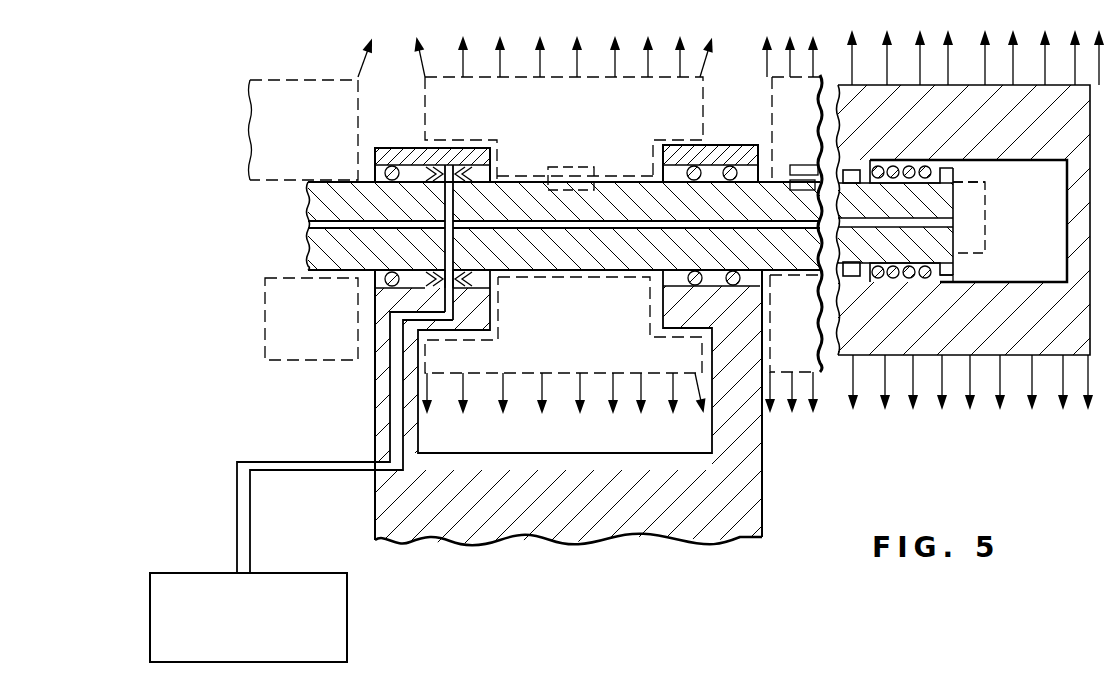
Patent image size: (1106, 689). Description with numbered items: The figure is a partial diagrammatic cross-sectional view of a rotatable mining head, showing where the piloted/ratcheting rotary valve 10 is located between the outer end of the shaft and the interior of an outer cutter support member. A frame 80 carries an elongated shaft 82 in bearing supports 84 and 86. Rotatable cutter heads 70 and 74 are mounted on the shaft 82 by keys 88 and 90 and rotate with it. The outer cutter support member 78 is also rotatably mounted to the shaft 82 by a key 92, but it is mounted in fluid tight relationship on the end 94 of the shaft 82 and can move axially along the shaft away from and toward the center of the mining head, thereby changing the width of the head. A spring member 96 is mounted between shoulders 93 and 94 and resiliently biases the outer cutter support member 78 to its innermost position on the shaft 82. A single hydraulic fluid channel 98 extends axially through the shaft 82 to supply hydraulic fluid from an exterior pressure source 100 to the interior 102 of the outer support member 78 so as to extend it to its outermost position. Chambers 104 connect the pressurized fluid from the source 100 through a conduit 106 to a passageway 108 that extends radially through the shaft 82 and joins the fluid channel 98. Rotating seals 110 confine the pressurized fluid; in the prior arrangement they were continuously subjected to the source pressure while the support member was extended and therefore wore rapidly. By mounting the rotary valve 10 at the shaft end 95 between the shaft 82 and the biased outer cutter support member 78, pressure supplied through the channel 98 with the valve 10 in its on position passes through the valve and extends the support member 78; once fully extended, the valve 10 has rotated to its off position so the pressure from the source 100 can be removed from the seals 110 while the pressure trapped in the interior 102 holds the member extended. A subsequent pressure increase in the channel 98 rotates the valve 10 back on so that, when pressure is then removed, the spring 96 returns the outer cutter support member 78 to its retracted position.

The piloted/ratcheting rotary valve 10 is at (985, 184).
The rotatable cutter head 70 is at (590, 85).
The rotatable cutter head 74 is at (818, 78).
The outer cutter support member 78 is at (965, 85).
The frame 80 is at (763, 497).
The elongated shaft 82 is at (603, 250).
The bearing support 84 is at (452, 162).
The bearing support 86 is at (663, 145).
The key 88 is at (572, 165).
The key 90 is at (805, 163).
The key 92 is at (850, 170).
The shoulder 93 is at (845, 274).
The end of shaft 94 is at (955, 272).
The end of the elongated shaft 95 is at (955, 200).
The spring member 96 is at (912, 166).
The hydraulic fluid channel 98 is at (624, 225).
The exterior pressure source 100 is at (318, 637).
The interior 102 is at (1046, 237).
The chambers 104 is at (457, 176).
The conduit 106 is at (392, 416).
The passageway 108 is at (455, 257).
The rotating seals 110 is at (427, 170).